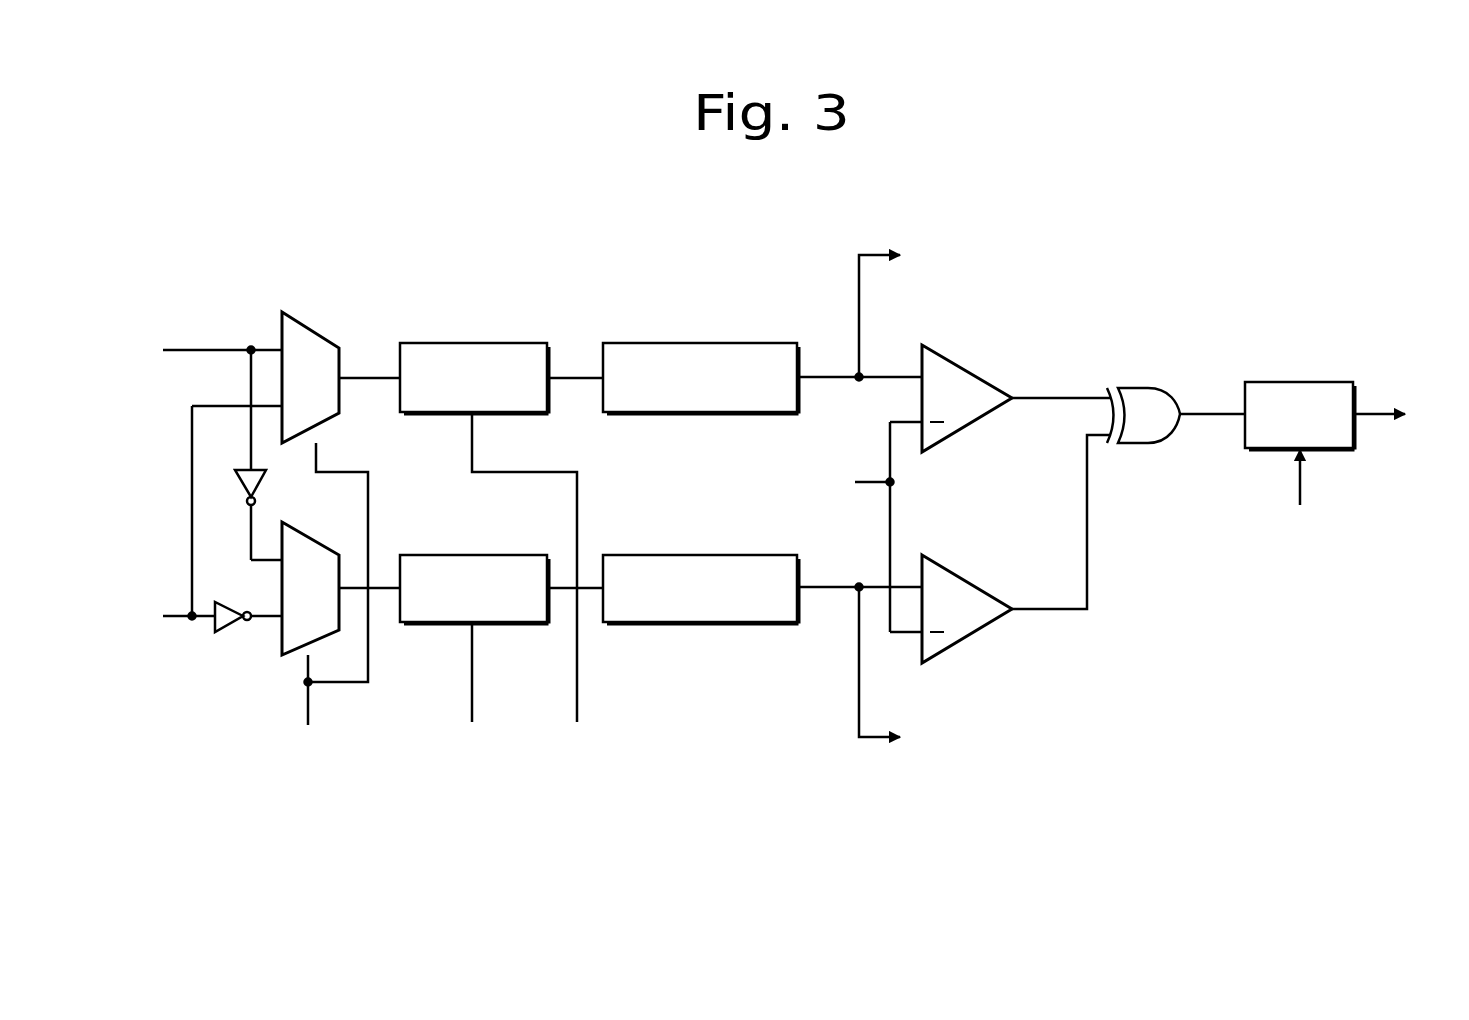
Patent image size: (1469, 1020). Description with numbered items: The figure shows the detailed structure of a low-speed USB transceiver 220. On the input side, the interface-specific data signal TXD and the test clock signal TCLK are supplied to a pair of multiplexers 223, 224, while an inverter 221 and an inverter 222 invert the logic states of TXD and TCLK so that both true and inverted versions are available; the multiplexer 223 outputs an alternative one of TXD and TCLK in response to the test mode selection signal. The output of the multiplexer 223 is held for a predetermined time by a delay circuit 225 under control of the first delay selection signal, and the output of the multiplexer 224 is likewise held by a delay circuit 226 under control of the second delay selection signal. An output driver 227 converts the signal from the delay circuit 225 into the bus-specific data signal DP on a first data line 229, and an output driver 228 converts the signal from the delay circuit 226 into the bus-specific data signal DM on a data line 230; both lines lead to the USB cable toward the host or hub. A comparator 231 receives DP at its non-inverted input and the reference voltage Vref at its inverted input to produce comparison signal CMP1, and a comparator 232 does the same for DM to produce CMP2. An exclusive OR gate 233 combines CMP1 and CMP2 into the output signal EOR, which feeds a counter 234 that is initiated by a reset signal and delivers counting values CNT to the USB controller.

The transceiver 220 is at (263, 220).
The inverter 221 is at (238, 481).
The inverter 222 is at (231, 633).
The multiplexer 223 is at (310, 327).
The multiplexer 224 is at (310, 537).
The delay circuit 225 is at (495, 343).
The delay circuit 226 is at (495, 555).
The output driver 227 is at (748, 343).
The output driver 228 is at (748, 555).
The first data line 229 is at (860, 304).
The data line 230 is at (859, 696).
The comparator 231 is at (968, 368).
The comparator 232 is at (968, 579).
The exclusive OR gate 233 is at (1140, 388).
The counter 234 is at (1307, 382).